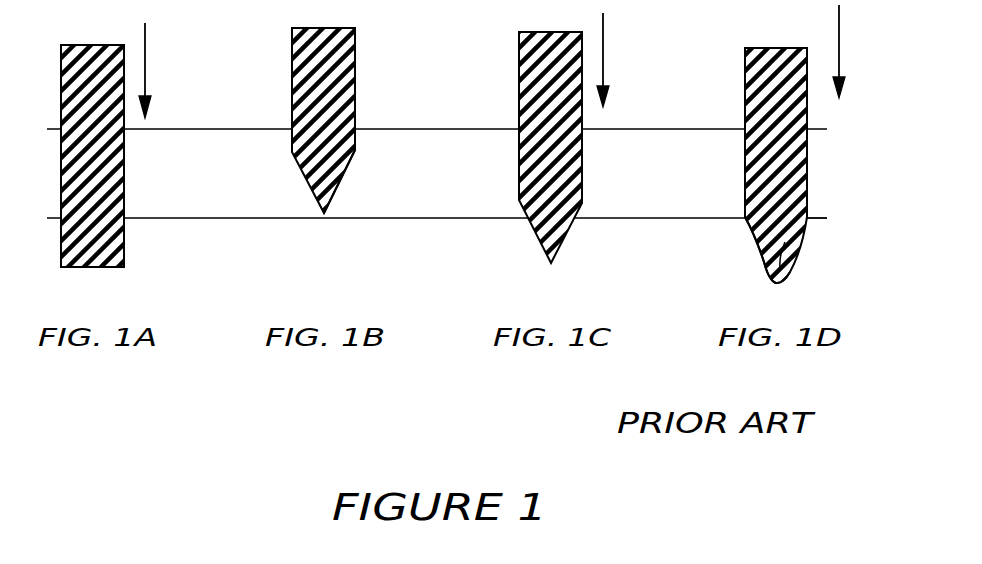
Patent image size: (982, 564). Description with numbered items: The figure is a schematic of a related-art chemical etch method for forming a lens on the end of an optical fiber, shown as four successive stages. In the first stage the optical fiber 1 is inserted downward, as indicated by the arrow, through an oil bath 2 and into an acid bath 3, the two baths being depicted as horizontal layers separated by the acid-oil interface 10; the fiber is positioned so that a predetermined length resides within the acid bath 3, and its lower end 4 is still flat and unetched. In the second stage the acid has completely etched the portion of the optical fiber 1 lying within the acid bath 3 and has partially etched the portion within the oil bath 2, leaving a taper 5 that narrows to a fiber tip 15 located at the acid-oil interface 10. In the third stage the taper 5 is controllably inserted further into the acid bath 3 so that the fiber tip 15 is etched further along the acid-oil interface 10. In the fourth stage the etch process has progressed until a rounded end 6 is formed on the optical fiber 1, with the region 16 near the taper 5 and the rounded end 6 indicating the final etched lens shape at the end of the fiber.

In FIG. 1A, the optical fiber 1 is at (67, 53).
In FIG. 1A, the oil bath 2 is at (212, 199).
In FIG. 1A, the acid bath 3 is at (223, 287).
In FIG. 1A, the flat tool end 4 is at (85, 272).
In FIG. 1B, the taper 5 is at (343, 180).
In FIG. 1D, the taper 5 is at (752, 240).
In FIG. 1B, the fiber tip 15 is at (324, 214).
In FIG. 1D, the acid-oil interface 10 is at (832, 217).
In FIG. 1D, the worn region 16 is at (785, 240).
In FIG. 1D, the rounded end 6 is at (773, 282).